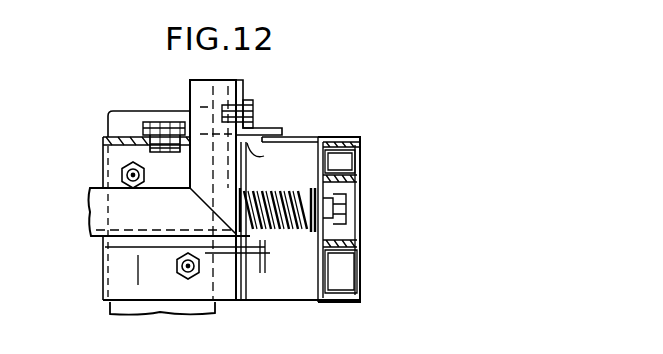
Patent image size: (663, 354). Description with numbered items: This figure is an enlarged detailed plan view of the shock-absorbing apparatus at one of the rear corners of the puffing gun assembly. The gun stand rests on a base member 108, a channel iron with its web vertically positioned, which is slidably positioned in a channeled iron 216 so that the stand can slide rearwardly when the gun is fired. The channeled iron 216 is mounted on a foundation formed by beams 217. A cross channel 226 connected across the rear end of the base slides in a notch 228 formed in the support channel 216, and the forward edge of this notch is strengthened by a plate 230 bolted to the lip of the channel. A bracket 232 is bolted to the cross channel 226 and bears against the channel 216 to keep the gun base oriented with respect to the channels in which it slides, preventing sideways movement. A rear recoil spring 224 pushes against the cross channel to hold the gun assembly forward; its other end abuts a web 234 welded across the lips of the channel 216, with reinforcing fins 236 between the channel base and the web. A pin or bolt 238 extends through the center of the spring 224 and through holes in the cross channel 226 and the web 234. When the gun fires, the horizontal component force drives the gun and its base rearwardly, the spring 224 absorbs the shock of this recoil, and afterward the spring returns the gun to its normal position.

The base member 108 is at (100, 232).
The channeled iron 216 is at (340, 137).
The beams 217 is at (180, 313).
The rear recoil spring 224 is at (348, 157).
The cross channel 226 is at (238, 84).
The notch 228 is at (293, 137).
The plate 230 is at (165, 127).
The bracket 232 is at (262, 128).
The web 234 is at (320, 285).
The reinforcing fins 236 is at (350, 188).
The pin or bolt 238 is at (358, 152).